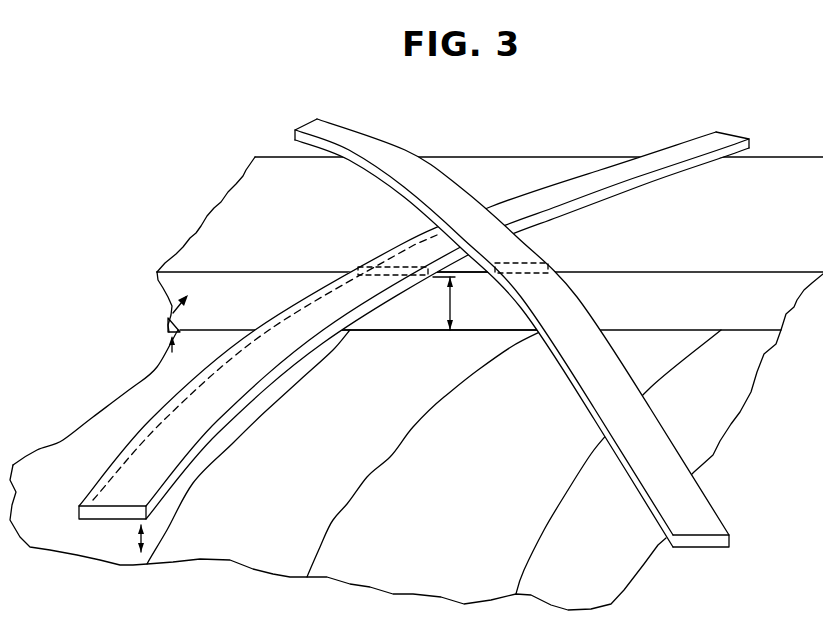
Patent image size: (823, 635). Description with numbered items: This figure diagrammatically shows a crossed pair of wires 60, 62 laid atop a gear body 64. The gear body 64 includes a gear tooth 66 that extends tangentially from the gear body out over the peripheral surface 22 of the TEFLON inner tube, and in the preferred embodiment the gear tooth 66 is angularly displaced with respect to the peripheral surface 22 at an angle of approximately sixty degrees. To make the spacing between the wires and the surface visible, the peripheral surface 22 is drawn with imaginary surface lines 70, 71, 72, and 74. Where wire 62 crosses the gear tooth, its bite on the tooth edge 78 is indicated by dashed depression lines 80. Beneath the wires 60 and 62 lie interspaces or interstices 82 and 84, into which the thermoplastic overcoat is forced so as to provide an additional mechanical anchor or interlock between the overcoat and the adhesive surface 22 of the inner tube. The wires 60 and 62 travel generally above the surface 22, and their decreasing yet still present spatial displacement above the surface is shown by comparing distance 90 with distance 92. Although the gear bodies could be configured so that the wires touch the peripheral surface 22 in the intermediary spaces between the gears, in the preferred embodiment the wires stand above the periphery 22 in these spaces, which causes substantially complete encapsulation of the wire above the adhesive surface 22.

The peripheral surface 22 is at (157, 357).
The wire 60 is at (350, 130).
The wire 62 is at (693, 143).
The gear body 64 is at (230, 220).
The gear tooth 66 is at (197, 263).
The imaginary surface line 70 is at (63, 442).
The imaginary surface line 71 is at (193, 483).
The imaginary surface line 72 is at (348, 504).
The imaginary surface line 74 is at (548, 527).
The tooth edge 78 is at (302, 272).
The dashed depression lines 80 is at (362, 267).
The interspace 82 is at (398, 307).
The interspace 84 is at (508, 317).
The distance 90 is at (139, 553).
The distance 92 is at (451, 303).